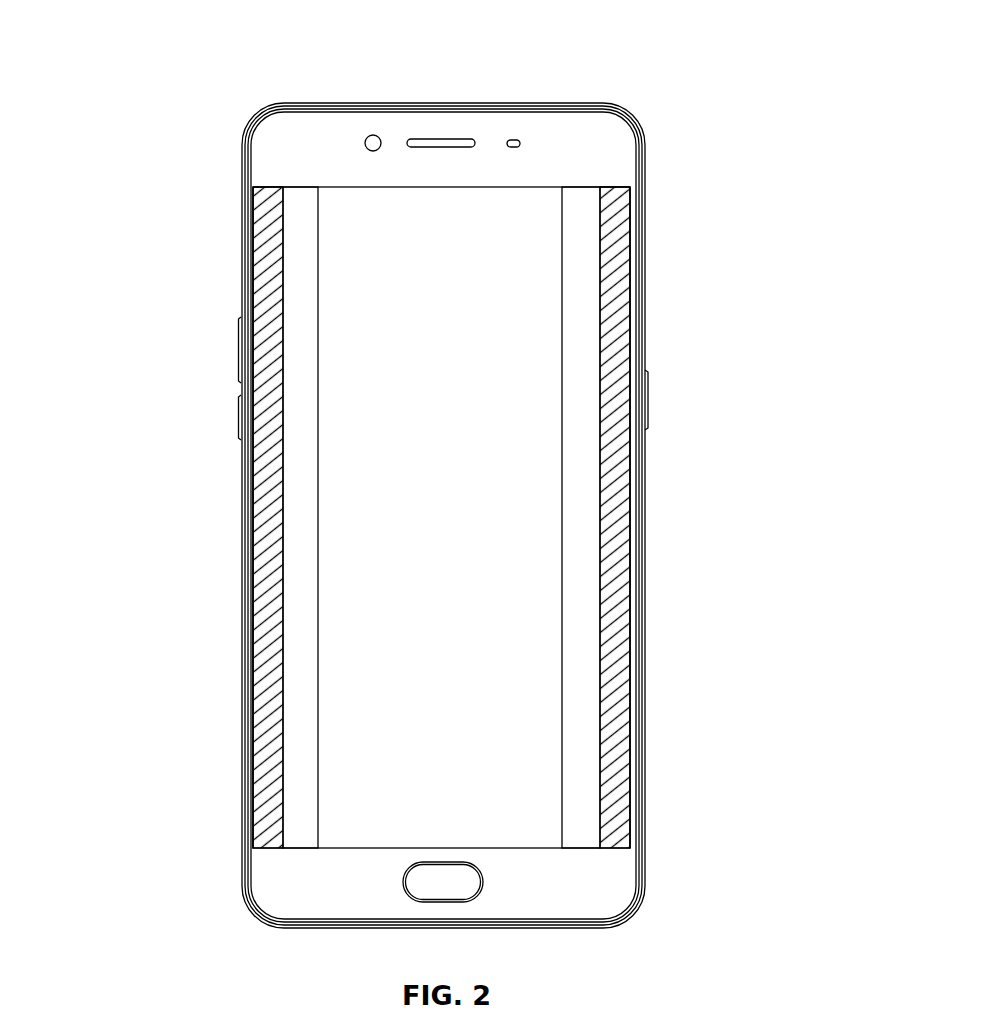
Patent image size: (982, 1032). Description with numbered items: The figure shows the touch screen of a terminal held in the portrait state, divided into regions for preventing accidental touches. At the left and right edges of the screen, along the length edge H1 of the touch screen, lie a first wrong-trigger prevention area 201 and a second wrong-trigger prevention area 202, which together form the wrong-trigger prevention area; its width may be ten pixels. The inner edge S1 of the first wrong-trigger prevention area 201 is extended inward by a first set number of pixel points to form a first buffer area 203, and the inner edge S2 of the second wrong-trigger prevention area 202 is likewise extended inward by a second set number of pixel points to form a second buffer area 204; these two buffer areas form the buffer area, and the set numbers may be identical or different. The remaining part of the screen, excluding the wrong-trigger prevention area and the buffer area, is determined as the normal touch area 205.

The first wrong-trigger prevention area 201 is at (265, 303).
The second wrong-trigger prevention area 202 is at (613, 290).
The first buffer area 203 is at (309, 515).
The second buffer area 204 is at (580, 530).
The normal touch area 205 is at (453, 247).
The inner edge of the first wrong-trigger prevention area S1 is at (280, 390).
The inner edge of the second wrong-trigger prevention area S2 is at (603, 403).
The length edge of the touch screen H1 is at (255, 245).